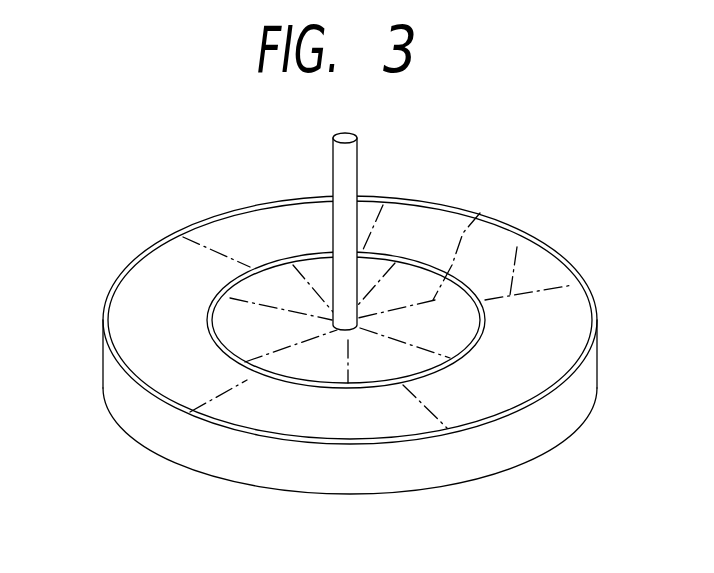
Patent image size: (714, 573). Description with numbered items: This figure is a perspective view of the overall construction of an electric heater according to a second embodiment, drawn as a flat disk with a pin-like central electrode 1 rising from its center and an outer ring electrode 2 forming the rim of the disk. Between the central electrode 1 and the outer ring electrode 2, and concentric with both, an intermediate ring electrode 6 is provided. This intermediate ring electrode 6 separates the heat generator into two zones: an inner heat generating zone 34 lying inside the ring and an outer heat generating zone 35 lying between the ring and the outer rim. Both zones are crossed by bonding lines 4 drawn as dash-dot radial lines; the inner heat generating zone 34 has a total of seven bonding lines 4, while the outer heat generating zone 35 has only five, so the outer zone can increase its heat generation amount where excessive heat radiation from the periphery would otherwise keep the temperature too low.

The central electrode 1 is at (357, 162).
The outer ring electrode 2 is at (257, 463).
The bonding lines 4 is at (480, 213).
The intermediate ring electrode 6 is at (263, 267).
The inner heat generating zone 34 is at (380, 363).
The outer heat generating zone 35 is at (512, 372).